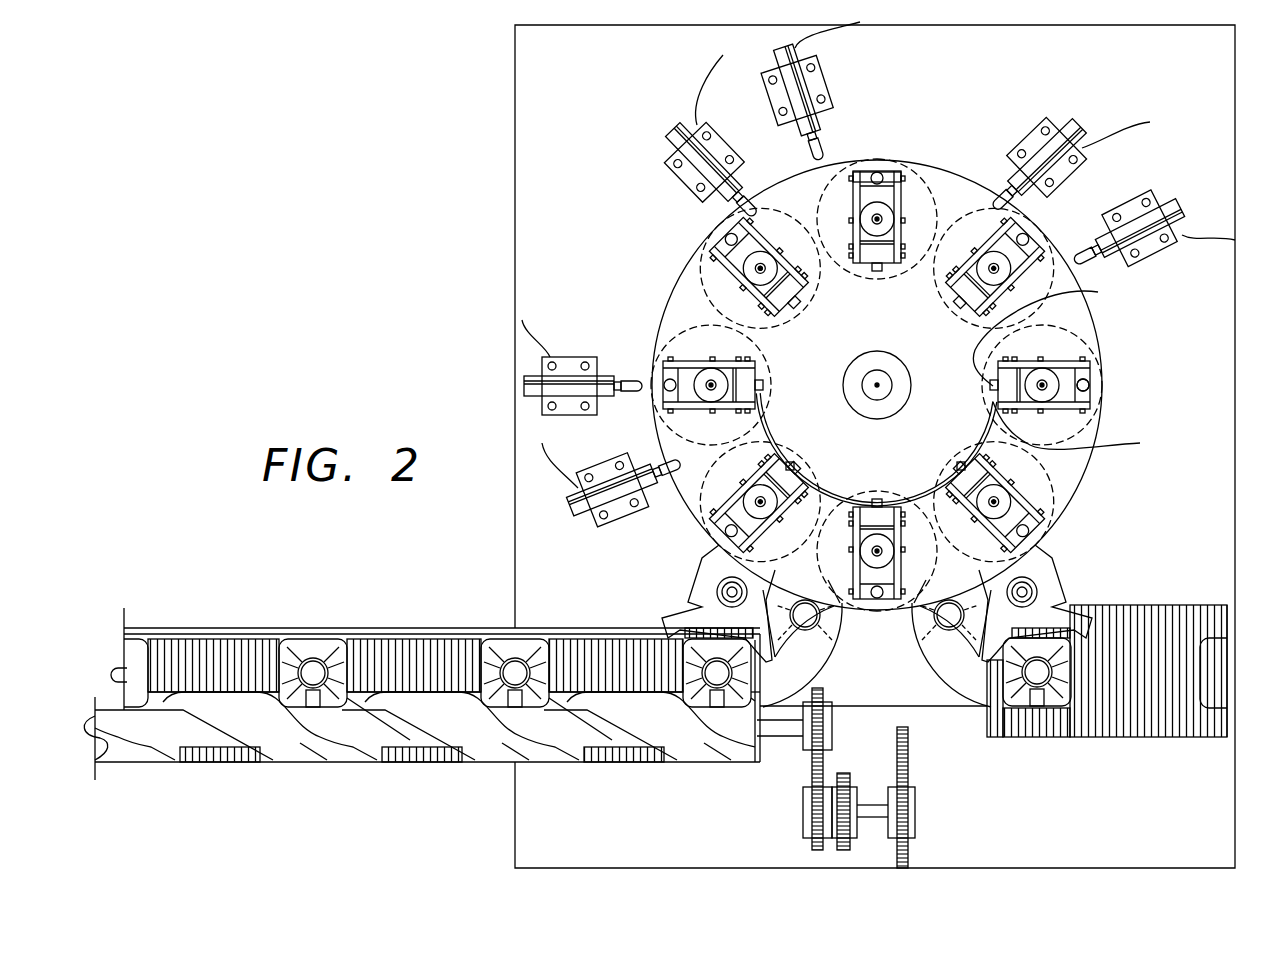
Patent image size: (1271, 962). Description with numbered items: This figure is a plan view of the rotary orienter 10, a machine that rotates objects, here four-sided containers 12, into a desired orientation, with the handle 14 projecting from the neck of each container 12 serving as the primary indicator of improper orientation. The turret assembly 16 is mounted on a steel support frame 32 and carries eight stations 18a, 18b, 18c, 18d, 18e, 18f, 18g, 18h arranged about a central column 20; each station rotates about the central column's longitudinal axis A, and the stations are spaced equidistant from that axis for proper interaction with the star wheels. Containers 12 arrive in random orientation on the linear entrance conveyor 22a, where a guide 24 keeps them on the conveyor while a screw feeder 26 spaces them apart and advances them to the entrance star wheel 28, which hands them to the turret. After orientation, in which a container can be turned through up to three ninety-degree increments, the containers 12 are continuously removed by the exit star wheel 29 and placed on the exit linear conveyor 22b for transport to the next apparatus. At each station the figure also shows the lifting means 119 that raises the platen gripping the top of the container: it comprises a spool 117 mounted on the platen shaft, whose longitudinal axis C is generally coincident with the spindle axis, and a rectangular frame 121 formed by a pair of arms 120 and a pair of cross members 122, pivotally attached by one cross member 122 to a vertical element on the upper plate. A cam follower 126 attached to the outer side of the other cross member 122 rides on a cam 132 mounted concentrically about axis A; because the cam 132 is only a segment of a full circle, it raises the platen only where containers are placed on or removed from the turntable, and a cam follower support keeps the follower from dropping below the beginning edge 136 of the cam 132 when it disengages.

The rotary orienter 10 is at (806, 385).
The container 12 is at (283, 673).
The open handle 14 is at (307, 655).
The turret assembly 16 is at (1103, 413).
The station 18a is at (696, 514).
The station 18b is at (655, 347).
The station 18c is at (690, 245).
The station 18d is at (920, 168).
The station 18e is at (1052, 240).
The station 18f is at (1097, 345).
The station 18g is at (1055, 492).
The station 18h is at (887, 617).
The central column 20 is at (860, 398).
The linear entrance conveyor 22a is at (168, 650).
The exit linear conveyor 22b is at (1143, 700).
The guide 24 is at (353, 633).
The screw feeder 26 is at (310, 747).
The entrance star wheel 28 is at (698, 605).
The exit star wheel 29 is at (1053, 585).
The support frame 32 is at (515, 162).
The spool 117 is at (690, 207).
The lifting means 119 is at (1097, 382).
The arm 120 is at (862, 217).
The rectangular frame 121 is at (683, 413).
The cross member 122 is at (888, 173).
The cam follower 126 is at (950, 469).
The cam 132 is at (1091, 432).
The beginning edge 136 is at (1059, 333).
The longitudinal axis of the central column A is at (877, 385).
The longitudinal axis of the shaft C is at (760, 268).